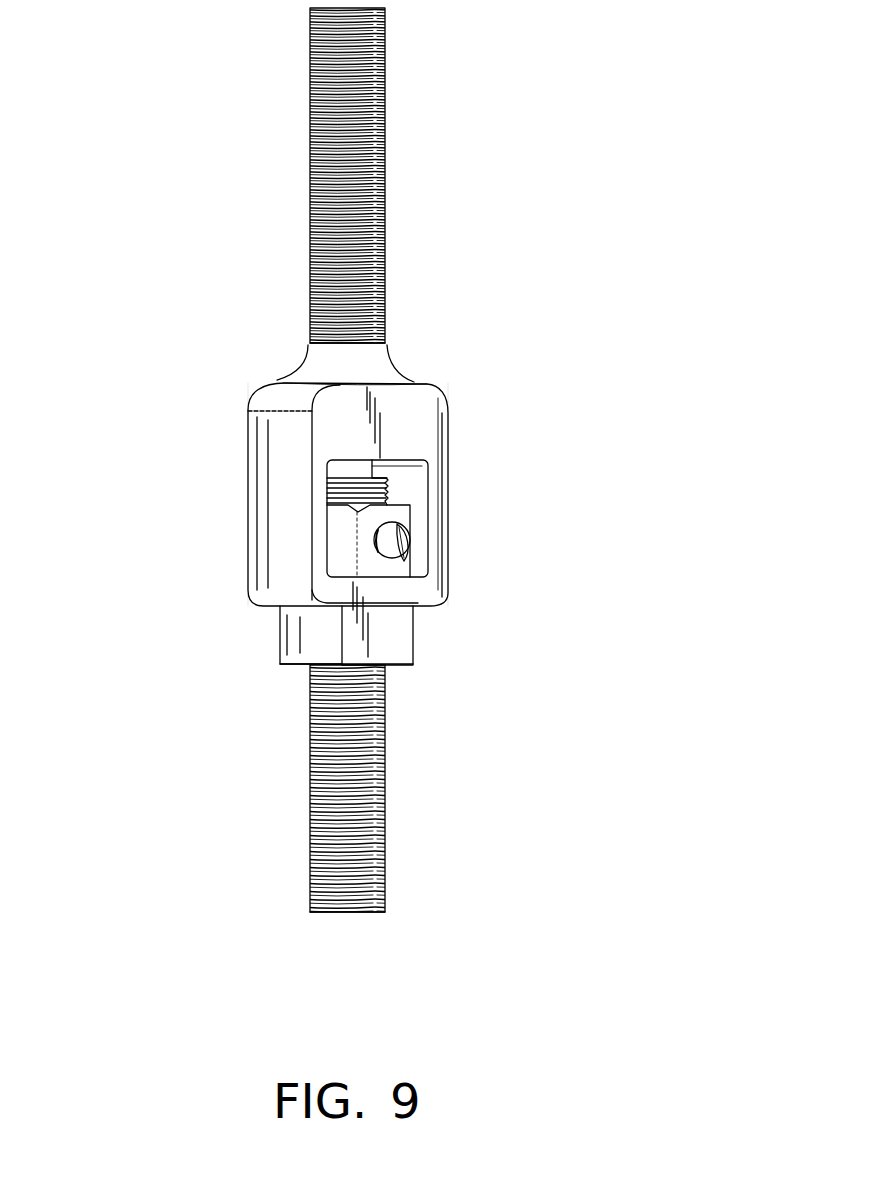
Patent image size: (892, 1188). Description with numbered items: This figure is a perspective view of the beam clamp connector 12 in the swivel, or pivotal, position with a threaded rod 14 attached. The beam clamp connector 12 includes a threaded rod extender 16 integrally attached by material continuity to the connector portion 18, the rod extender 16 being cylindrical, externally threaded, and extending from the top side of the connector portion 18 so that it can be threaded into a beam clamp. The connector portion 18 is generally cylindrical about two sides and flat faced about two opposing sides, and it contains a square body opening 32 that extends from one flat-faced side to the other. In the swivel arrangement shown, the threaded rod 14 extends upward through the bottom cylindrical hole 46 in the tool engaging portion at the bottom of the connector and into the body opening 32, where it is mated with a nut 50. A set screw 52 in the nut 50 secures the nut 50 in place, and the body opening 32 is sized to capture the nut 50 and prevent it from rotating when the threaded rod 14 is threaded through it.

The beam clamp connector 12 is at (185, 372).
The threaded rod 14 is at (380, 782).
The threaded rod extender 16 is at (385, 284).
The connector portion 18 is at (275, 507).
The body opening 32 is at (405, 490).
The bottom cylindrical hole 46 is at (310, 672).
The nut 50 is at (402, 571).
The set screw 52 is at (412, 536).